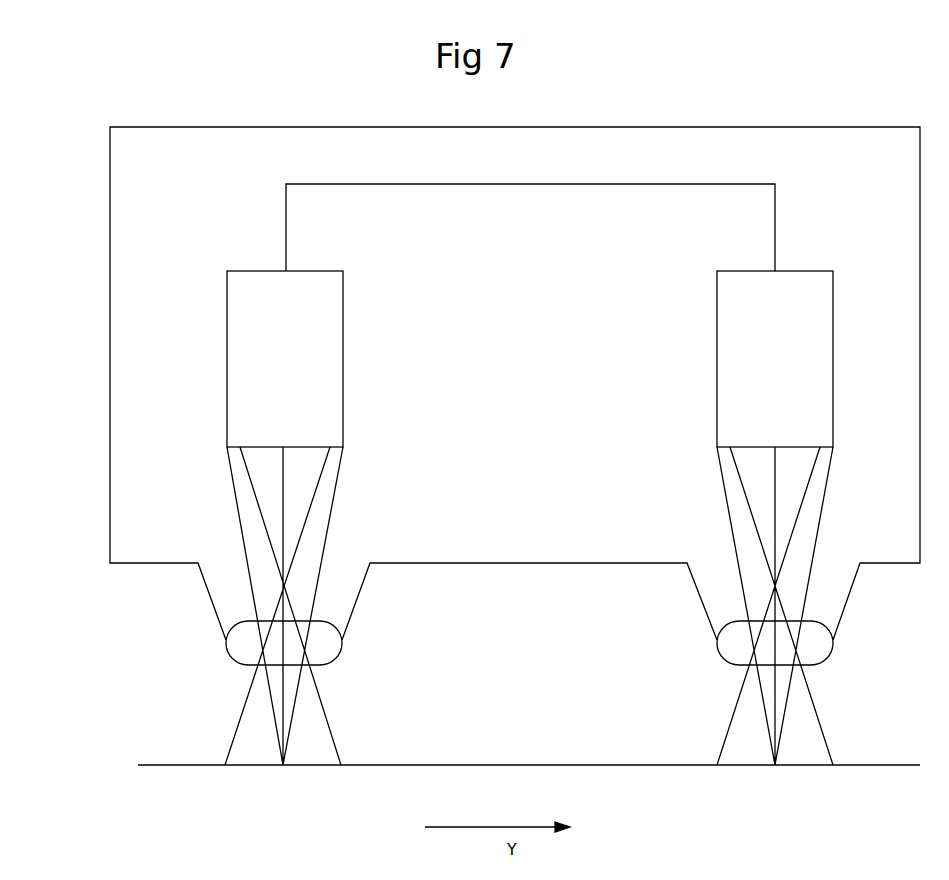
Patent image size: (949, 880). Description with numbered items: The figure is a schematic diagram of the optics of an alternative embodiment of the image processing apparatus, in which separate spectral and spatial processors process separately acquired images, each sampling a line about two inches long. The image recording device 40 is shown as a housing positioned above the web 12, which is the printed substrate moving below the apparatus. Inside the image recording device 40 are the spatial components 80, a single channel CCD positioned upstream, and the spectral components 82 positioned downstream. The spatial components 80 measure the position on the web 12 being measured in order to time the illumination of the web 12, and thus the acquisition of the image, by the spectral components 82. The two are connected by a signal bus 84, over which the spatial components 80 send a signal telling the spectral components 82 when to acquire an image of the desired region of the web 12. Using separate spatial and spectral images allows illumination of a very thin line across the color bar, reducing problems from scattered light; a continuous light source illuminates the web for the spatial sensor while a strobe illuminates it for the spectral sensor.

The image recording device 40 is at (642, 125).
The signal bus 84 is at (513, 184).
The spatial components 80 is at (343, 322).
The spectral components 82 is at (833, 328).
The web 12 is at (145, 767).